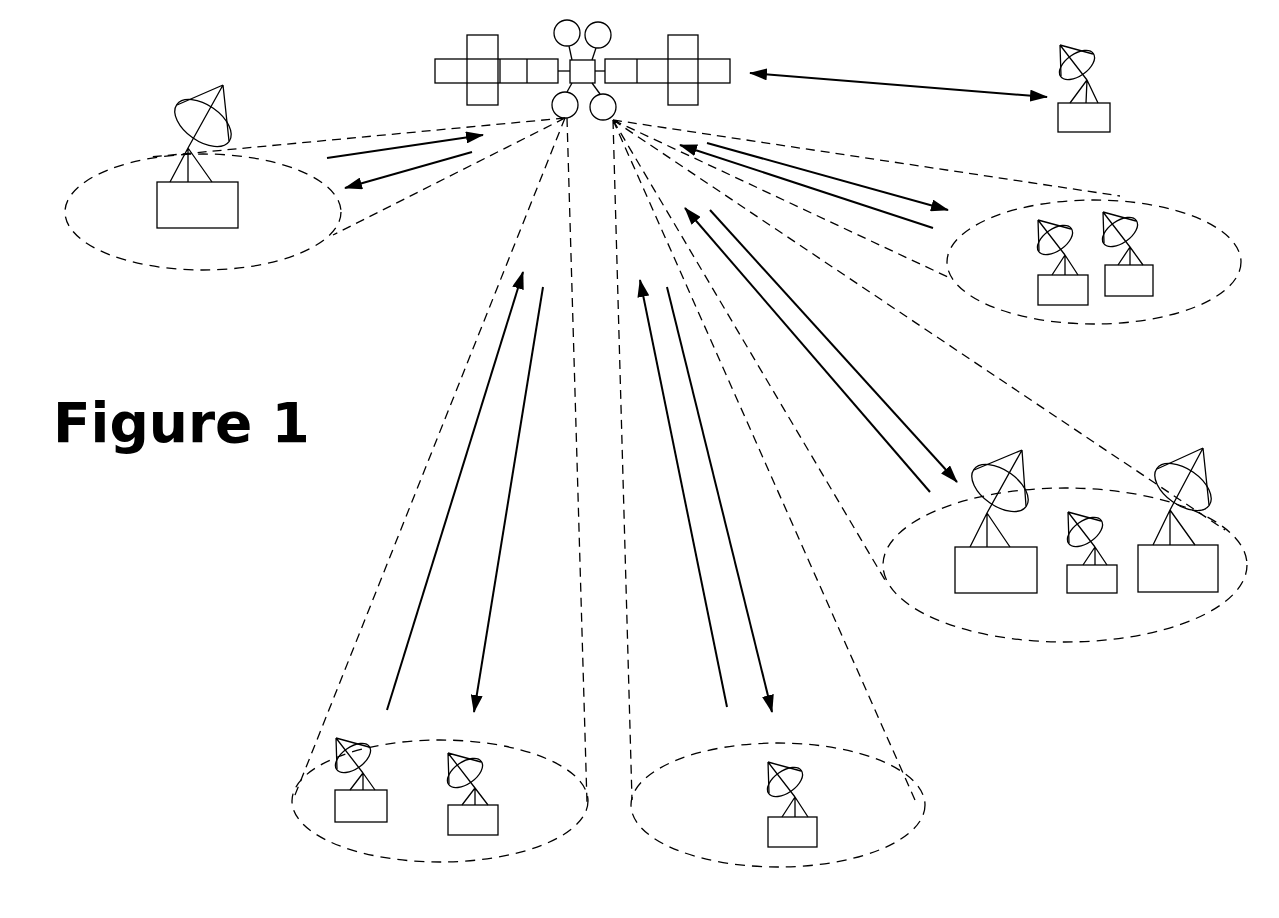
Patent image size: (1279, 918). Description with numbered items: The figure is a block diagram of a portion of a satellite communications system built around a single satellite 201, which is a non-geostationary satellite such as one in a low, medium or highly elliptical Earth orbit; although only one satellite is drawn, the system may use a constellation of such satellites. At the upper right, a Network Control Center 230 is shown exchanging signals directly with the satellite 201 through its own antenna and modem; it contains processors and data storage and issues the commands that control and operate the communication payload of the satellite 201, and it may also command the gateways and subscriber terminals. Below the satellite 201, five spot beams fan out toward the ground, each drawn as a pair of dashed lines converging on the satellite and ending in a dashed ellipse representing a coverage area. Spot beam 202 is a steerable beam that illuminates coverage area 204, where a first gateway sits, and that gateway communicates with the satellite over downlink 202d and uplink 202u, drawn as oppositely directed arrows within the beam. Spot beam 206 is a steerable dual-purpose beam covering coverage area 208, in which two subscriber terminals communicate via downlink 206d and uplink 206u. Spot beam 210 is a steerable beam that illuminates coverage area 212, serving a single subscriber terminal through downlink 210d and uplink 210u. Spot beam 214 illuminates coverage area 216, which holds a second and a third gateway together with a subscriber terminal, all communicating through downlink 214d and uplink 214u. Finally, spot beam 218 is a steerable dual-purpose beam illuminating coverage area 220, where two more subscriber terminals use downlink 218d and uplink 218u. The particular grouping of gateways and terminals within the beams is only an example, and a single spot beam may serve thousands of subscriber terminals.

The satellite 201 is at (732, 50).
The spot beam 202 is at (353, 138).
The uplink 202u is at (412, 145).
The downlink 202d is at (428, 165).
The coverage area 204 is at (94, 229).
The spot beam 206 is at (417, 488).
The uplink 206u is at (428, 583).
The downlink 206d is at (482, 662).
The coverage area 208 is at (386, 852).
The spot beam 210 is at (893, 733).
The uplink 210u is at (718, 672).
The downlink 210d is at (753, 642).
The coverage area 212 is at (664, 832).
The spot beam 214 is at (1060, 422).
The uplink 214u is at (905, 462).
The downlink 214d is at (903, 420).
The coverage area 216 is at (928, 617).
The spot beam 218 is at (920, 267).
The uplink 218u is at (858, 203).
The downlink 218d is at (893, 197).
The coverage area 220 is at (1194, 271).
The Network Control Center 230 is at (1112, 125).